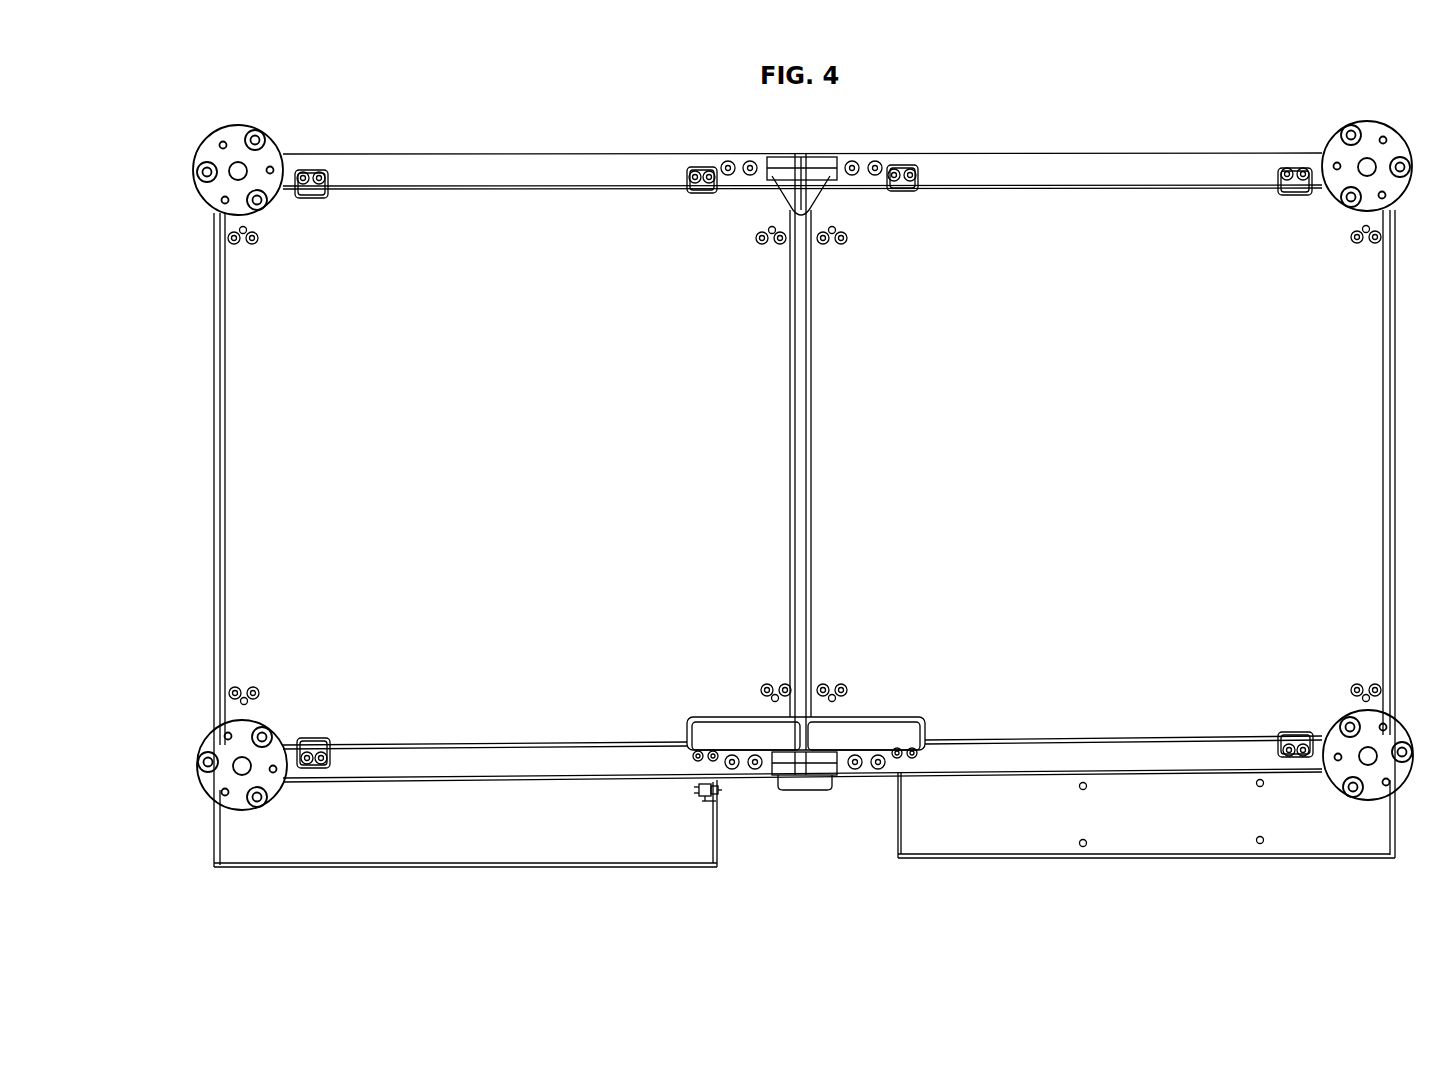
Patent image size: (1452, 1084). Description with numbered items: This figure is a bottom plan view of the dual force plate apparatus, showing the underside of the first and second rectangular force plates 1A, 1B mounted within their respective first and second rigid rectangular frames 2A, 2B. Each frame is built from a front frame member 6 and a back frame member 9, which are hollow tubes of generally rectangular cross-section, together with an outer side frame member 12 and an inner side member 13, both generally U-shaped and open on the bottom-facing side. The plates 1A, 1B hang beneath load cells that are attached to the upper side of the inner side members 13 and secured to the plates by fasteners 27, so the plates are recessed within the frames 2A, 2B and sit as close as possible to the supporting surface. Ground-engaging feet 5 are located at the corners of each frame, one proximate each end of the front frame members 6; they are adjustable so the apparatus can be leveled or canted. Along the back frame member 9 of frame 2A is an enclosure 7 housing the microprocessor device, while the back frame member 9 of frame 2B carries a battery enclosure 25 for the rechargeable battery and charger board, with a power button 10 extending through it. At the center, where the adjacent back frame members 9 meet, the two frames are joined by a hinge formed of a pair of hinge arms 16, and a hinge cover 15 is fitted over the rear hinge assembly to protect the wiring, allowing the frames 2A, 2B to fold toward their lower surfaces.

The first rectangular force plate 1A is at (1118, 240).
The second rectangular force plate 1B is at (538, 238).
The first rigid rectangular frame 2A is at (1045, 170).
The second rigid rectangular frame 2B is at (435, 170).
The ground engaging feet 5 is at (233, 134).
The front frame member 6 is at (603, 172).
The enclosure 7 is at (1142, 812).
The back frame member 9 is at (375, 764).
The power button 10 is at (722, 792).
The outer side frame member 12 is at (220, 343).
The inner side frame member 13 is at (792, 203).
The hinge cover 15 is at (805, 783).
The hinge arm 16 is at (833, 770).
The battery enclosure 25 is at (542, 815).
The fasteners 27 is at (841, 238).